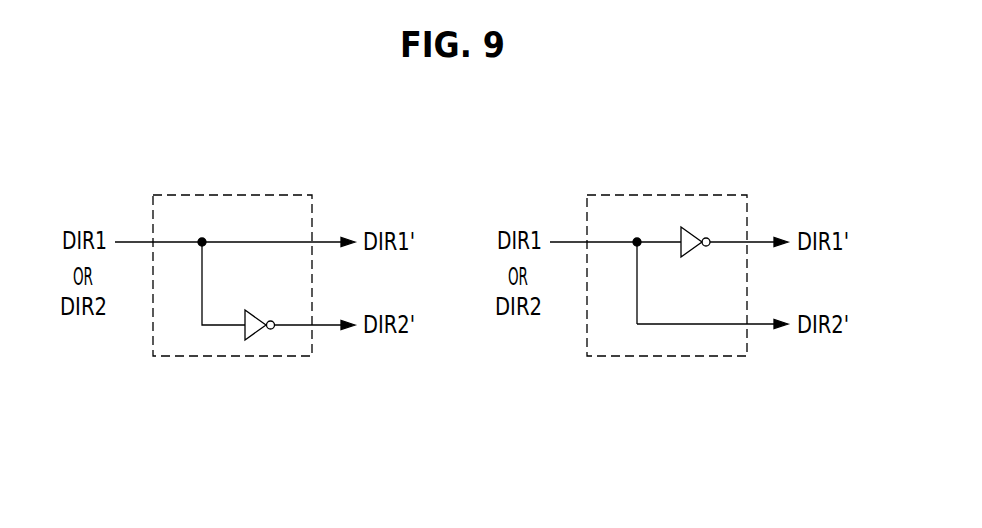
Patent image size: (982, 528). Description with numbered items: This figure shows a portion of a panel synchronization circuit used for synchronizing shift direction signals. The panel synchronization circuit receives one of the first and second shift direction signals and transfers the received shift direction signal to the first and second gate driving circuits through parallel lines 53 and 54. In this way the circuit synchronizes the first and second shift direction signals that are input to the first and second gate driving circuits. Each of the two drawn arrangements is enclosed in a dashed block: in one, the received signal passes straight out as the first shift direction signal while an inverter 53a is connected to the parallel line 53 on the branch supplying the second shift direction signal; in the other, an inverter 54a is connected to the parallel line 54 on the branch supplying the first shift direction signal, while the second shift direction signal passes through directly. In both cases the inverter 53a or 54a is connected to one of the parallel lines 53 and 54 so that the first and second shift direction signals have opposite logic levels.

The parallel line 53 is at (232, 267).
The inverter 53a is at (258, 333).
The parallel line 54 is at (667, 238).
The inverter 54a is at (693, 257).